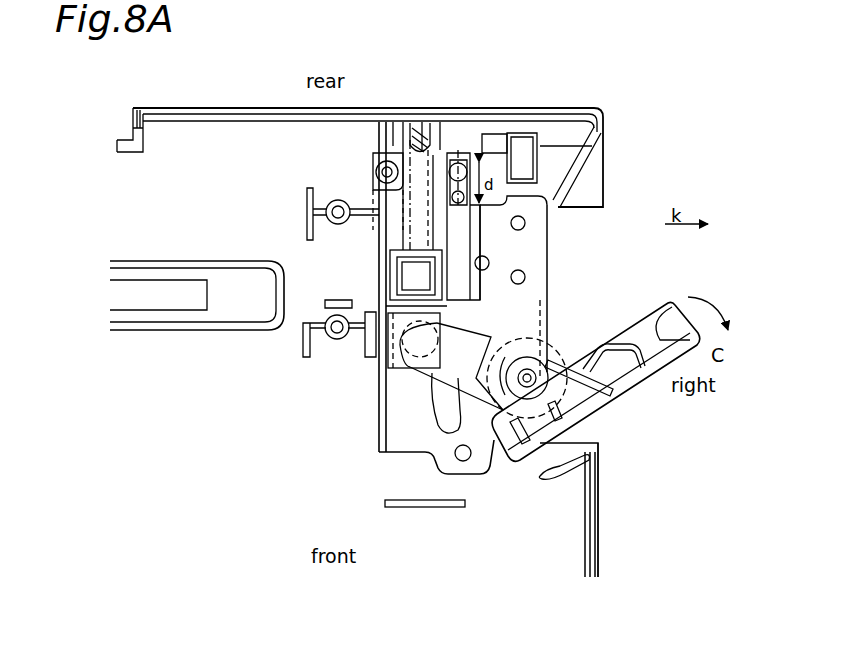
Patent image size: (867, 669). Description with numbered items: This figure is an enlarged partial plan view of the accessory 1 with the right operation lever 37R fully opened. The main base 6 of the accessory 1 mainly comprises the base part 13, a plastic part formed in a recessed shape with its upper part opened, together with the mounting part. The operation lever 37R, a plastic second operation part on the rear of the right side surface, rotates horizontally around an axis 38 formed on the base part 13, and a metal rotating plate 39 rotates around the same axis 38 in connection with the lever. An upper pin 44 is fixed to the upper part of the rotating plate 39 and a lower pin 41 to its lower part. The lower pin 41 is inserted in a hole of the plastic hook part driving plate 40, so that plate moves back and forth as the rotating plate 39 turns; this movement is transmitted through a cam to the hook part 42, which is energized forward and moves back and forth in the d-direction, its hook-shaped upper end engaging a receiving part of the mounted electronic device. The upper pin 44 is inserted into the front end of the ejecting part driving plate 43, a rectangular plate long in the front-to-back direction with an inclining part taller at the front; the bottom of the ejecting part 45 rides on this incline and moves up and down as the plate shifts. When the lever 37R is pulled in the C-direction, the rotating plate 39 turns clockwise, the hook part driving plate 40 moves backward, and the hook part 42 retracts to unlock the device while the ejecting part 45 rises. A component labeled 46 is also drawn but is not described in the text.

The accessory 1 is at (466, 557).
The main base 6 is at (606, 547).
The base part 13 is at (592, 500).
The operation lever 37R is at (565, 412).
The axis 38 is at (547, 346).
The rotating plate 39 is at (560, 386).
The hook part driving plate 40 is at (437, 430).
The lower pin 41 is at (535, 360).
The hook part 42 is at (468, 153).
The ejecting part driving plate 43 is at (393, 350).
The upper pin 44 is at (403, 352).
The ejecting part 45 is at (417, 283).
The arm 46 is at (145, 299).